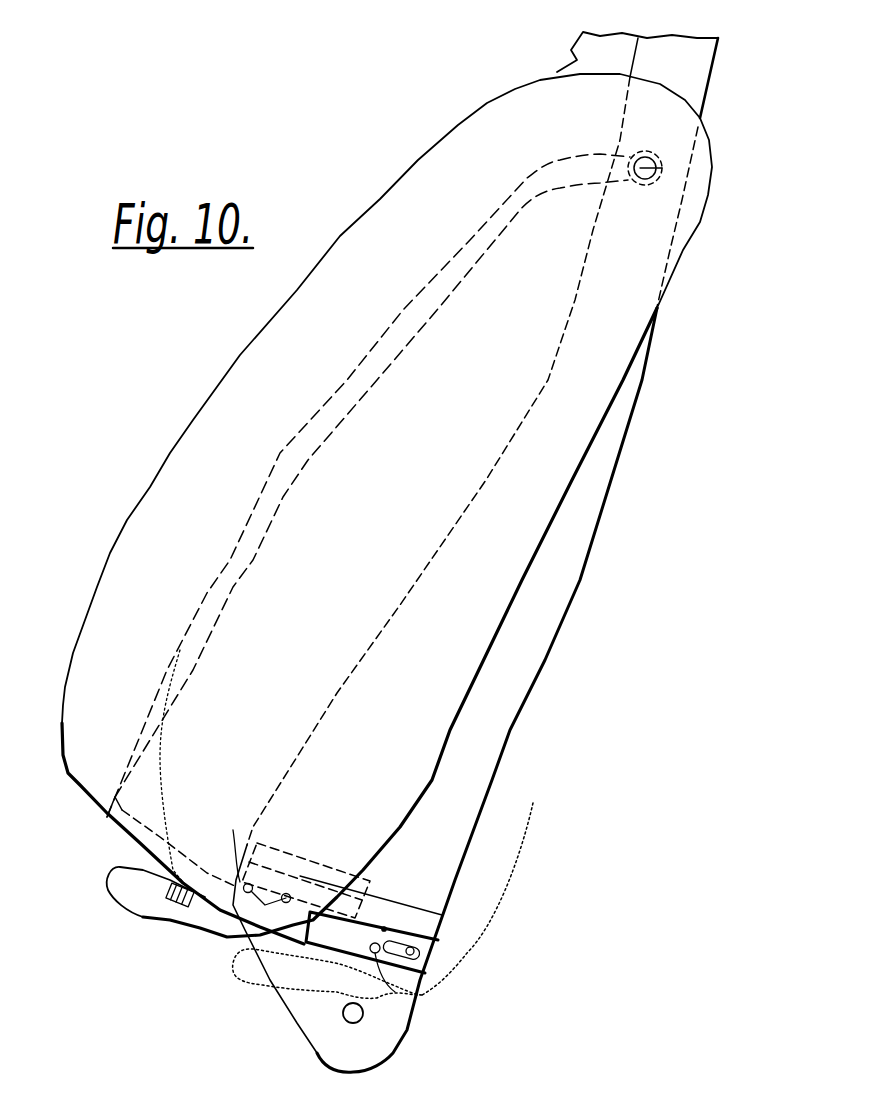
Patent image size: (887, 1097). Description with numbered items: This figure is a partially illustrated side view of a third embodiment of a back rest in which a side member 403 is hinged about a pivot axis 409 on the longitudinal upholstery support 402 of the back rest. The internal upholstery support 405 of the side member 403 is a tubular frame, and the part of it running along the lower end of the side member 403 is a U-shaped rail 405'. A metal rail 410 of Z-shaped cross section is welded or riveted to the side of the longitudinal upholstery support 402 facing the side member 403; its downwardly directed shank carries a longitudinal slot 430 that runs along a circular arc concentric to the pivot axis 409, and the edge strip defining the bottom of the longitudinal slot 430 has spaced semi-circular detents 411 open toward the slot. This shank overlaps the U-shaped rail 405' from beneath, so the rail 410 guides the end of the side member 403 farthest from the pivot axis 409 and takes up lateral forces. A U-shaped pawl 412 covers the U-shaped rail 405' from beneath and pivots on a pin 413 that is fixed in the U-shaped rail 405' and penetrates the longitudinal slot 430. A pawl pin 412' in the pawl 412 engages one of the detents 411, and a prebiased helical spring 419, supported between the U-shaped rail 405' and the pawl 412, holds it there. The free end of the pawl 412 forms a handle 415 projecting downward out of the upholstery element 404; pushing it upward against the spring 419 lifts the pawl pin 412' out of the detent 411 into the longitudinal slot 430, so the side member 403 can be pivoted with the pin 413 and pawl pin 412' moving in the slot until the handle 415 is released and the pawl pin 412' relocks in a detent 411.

The longitudinal upholstery support 402 is at (700, 77).
The side member 403 is at (362, 200).
The upholstery element 404 is at (232, 398).
The internal upholstery support 405 is at (368, 485).
The U-shaped rail 405' is at (139, 842).
The pivot axis 409 is at (662, 168).
The rail 410 is at (308, 989).
The detents 411 is at (332, 887).
The pawl 412 is at (226, 965).
The pawl pin 412' is at (303, 860).
The pin 413 is at (293, 888).
The handle 415 is at (110, 881).
The helical spring 419 is at (172, 903).
The longitudinal slot 430 is at (400, 952).